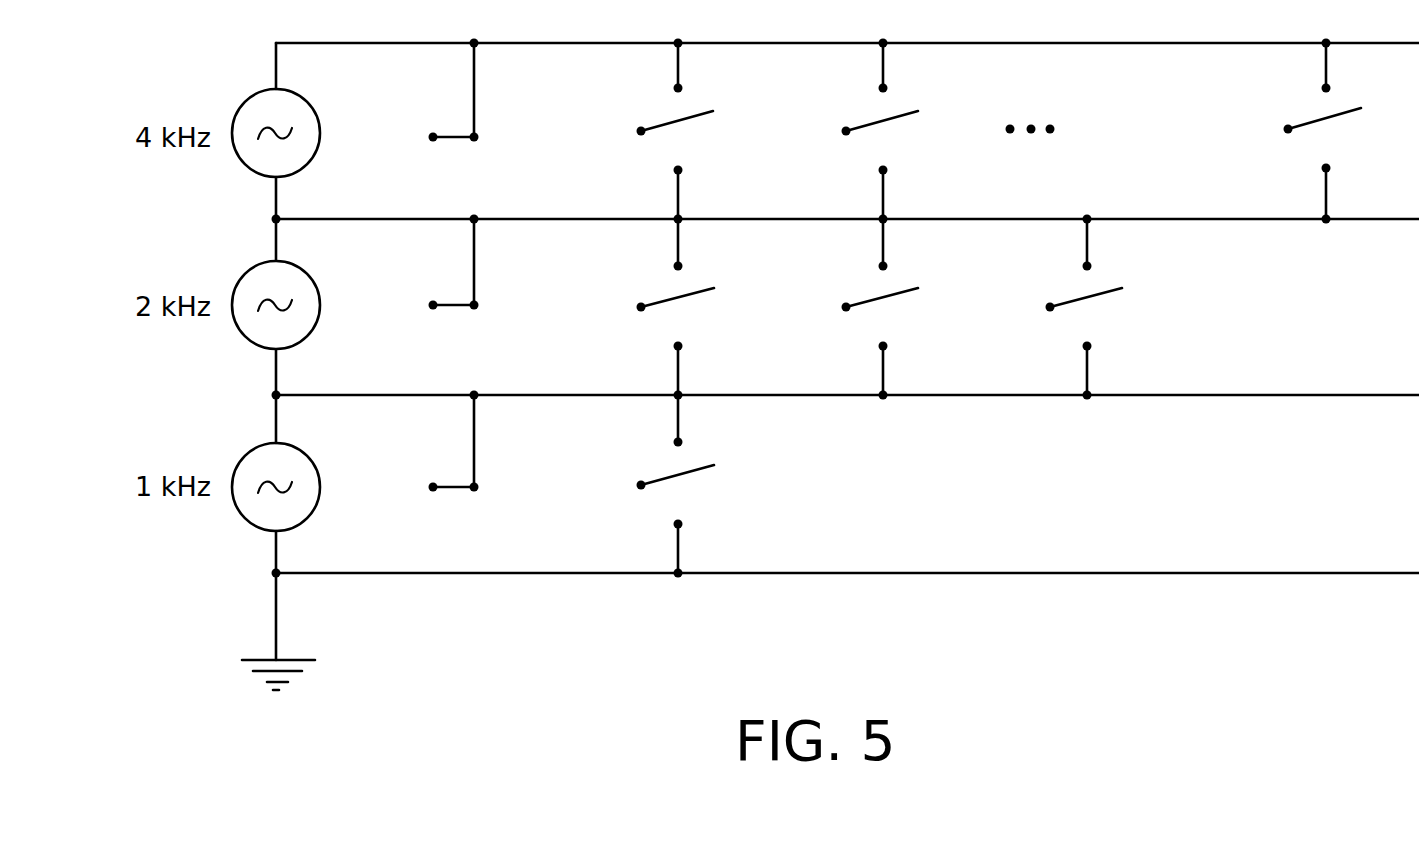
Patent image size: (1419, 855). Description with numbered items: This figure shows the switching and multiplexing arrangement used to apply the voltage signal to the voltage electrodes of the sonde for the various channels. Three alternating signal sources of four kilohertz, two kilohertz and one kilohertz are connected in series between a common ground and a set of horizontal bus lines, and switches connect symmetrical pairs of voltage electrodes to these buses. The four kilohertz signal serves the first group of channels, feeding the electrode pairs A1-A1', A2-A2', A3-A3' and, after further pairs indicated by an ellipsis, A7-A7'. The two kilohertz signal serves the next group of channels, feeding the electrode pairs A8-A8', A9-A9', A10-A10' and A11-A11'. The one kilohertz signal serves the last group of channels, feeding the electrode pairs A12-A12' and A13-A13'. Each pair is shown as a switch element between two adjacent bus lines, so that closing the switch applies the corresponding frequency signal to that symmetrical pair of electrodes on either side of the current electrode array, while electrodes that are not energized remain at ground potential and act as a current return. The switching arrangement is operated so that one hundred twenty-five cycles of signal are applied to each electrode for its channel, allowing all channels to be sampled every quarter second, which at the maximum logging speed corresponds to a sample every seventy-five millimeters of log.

The pair of voltage electrodes A1-A1' is at (459, 131).
The pair of voltage electrodes A2-A2' is at (694, 131).
The pair of voltage electrodes A3-A3' is at (900, 131).
The pair of voltage electrodes A7-A7' is at (1343, 131).
The pair of voltage electrodes A8-A8' is at (459, 309).
The pair of voltage electrodes A9-A9' is at (696, 309).
The pair of voltage electrodes A10-A10' is at (917, 309).
The pair of voltage electrodes A11-A11' is at (1118, 307).
The pair of voltage electrodes A12-A12' is at (476, 468).
The pair of voltage electrodes A13-A13' is at (713, 486).